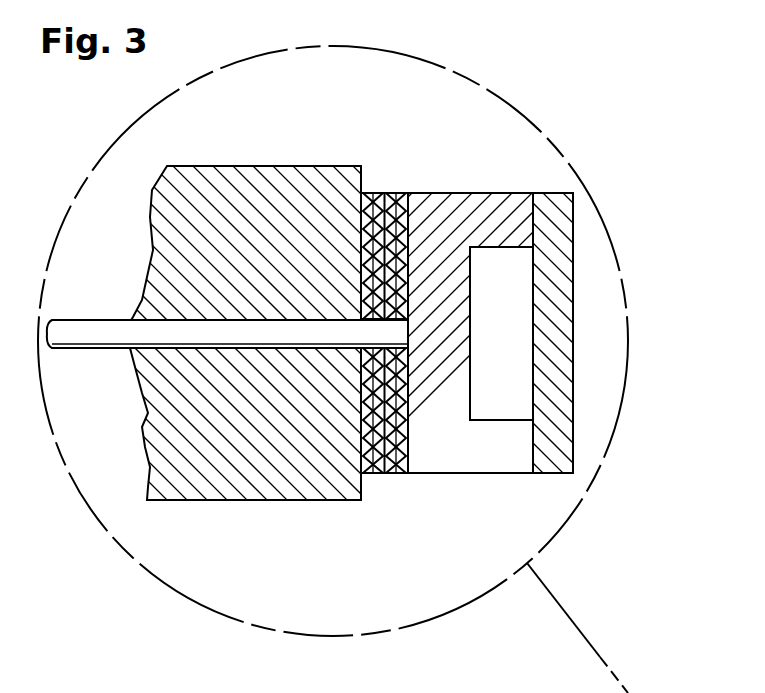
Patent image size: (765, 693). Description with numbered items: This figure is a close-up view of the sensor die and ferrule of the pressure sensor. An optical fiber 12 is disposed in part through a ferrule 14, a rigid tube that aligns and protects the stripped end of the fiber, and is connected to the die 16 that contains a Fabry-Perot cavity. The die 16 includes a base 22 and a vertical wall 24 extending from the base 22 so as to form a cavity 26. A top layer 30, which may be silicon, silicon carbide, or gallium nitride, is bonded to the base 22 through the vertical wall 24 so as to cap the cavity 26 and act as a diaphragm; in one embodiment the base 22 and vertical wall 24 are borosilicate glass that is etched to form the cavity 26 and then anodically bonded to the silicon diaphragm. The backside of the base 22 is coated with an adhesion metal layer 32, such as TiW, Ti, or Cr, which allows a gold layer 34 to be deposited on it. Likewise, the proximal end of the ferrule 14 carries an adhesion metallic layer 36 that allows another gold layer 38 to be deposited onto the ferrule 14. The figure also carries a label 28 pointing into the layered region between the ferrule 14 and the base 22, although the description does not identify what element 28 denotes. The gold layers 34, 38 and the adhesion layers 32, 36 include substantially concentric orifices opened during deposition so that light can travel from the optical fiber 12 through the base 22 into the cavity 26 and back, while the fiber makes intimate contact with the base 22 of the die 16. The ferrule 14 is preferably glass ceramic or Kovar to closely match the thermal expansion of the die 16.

The optical fiber 12 is at (97, 395).
The ferrule 14 is at (292, 500).
The die 16 is at (425, 482).
The base 22 is at (442, 237).
The vertical wall 24 is at (468, 476).
The cavity 26 is at (522, 318).
The spring pack 28 is at (387, 380).
The top layer 30 is at (565, 247).
The adhesion metal layer 32 is at (405, 193).
The gold layer 34 is at (388, 193).
The adhesion metallic layer 36 is at (368, 195).
The gold layer 38 is at (380, 193).